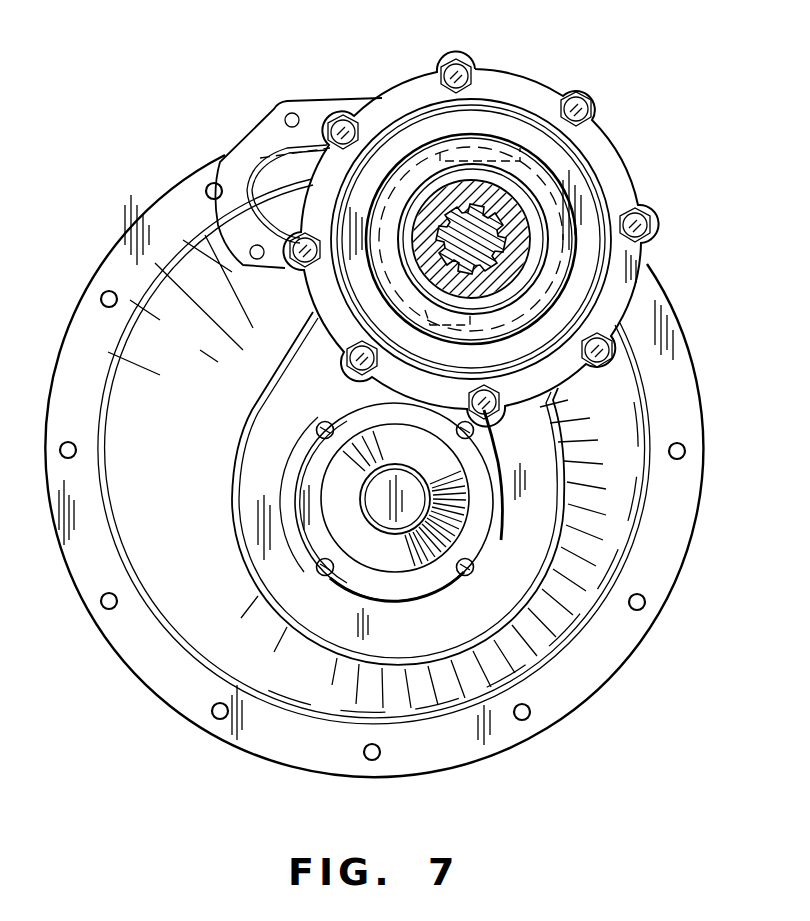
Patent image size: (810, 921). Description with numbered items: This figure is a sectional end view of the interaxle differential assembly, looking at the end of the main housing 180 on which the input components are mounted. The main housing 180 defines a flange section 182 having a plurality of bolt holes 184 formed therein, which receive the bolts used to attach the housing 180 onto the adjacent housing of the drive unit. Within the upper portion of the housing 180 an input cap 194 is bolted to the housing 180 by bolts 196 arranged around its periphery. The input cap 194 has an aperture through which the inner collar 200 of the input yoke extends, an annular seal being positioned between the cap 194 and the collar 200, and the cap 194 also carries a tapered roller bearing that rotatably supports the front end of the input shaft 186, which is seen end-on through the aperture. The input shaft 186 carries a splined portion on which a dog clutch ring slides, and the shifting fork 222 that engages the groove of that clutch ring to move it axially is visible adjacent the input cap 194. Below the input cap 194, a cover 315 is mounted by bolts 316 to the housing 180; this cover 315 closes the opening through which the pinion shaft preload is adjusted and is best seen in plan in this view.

The main housing 180 is at (200, 368).
The flange section 182 is at (668, 520).
The bolt holes 184 is at (686, 451).
The input shaft 186 is at (498, 272).
The input cap 194 is at (500, 112).
The bolts 196 is at (457, 60).
The inner collar 200 is at (520, 212).
The shifting fork 222 is at (402, 122).
The cover 315 is at (395, 572).
The bolts 316 is at (323, 574).